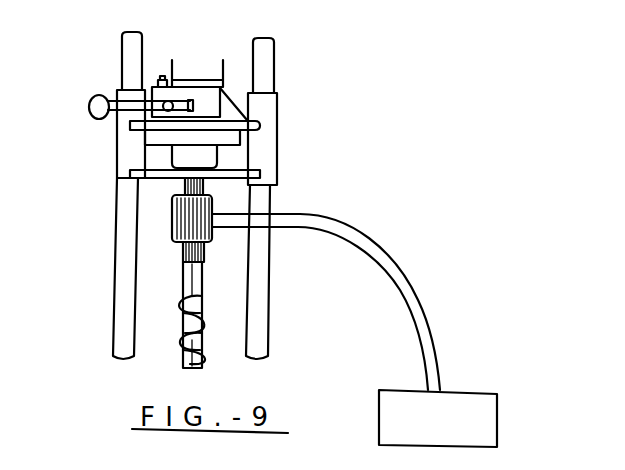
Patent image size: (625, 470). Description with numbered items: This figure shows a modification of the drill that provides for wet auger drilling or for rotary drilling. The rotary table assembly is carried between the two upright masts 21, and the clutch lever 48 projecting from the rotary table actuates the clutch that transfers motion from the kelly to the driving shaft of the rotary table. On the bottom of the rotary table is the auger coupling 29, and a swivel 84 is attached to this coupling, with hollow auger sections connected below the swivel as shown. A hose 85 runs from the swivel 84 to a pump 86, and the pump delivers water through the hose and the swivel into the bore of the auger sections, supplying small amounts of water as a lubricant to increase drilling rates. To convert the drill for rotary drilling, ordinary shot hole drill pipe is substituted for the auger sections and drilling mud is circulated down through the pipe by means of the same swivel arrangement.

The upright masts 21 is at (116, 283).
The auger coupling 29 is at (185, 184).
The clutch lever 48 is at (89, 108).
The swivel 84 is at (174, 243).
The hose 85 is at (409, 278).
The pump 86 is at (497, 372).